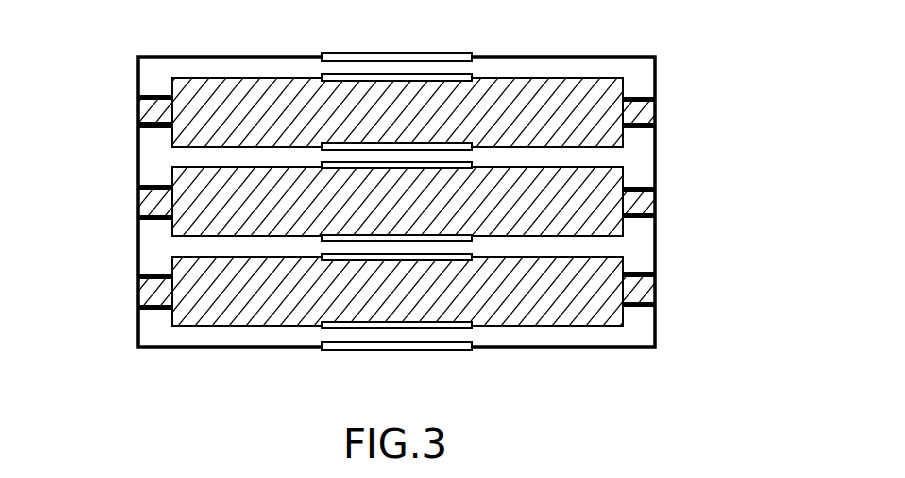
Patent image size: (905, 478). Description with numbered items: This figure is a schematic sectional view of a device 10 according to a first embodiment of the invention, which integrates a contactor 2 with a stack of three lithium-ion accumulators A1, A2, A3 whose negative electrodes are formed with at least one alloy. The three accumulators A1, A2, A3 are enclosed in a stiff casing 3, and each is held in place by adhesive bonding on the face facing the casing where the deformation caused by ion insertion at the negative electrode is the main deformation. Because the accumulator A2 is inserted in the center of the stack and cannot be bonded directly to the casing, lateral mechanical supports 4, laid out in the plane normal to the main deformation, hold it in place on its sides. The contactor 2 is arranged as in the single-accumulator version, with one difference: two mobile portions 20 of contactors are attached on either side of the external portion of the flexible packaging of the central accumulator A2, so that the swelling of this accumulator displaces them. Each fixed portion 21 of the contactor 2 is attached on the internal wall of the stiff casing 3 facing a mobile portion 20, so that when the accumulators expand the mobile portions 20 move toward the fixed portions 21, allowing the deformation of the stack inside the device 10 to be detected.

The contactor 2 is at (435, 44).
The stiff casing 3 is at (628, 45).
The lateral mechanical supports 4 is at (643, 117).
The device 10 is at (760, 191).
The mobile portion of the contactor 20 is at (465, 168).
The fixed portion of the contactor 21 is at (342, 56).
The lithium-ion accumulator A1 is at (196, 112).
The lithium-ion accumulator A2 is at (196, 202).
The lithium-ion accumulator A3 is at (196, 291).